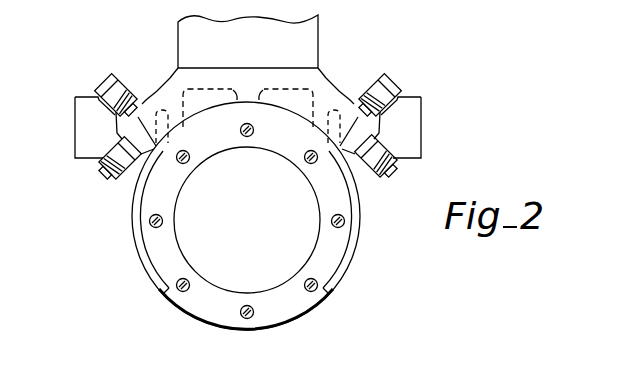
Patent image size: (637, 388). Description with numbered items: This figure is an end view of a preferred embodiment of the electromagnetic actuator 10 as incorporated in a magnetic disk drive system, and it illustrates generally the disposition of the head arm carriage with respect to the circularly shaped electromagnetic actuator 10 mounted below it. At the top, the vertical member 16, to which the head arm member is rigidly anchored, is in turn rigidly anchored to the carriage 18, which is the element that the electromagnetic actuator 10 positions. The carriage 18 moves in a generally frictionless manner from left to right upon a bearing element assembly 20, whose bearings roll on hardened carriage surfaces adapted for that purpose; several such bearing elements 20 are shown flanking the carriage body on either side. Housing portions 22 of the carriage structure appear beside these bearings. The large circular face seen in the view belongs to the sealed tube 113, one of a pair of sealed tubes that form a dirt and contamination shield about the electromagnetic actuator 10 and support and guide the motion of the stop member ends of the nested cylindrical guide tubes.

The electromagnetic actuator 10 is at (338, 312).
The vertical member 16 is at (260, 56).
The carriage 18 is at (258, 93).
The bearing element assembly 20 is at (102, 84).
The housing elbow portion 22 is at (137, 120).
The sealed tube 113 is at (258, 222).